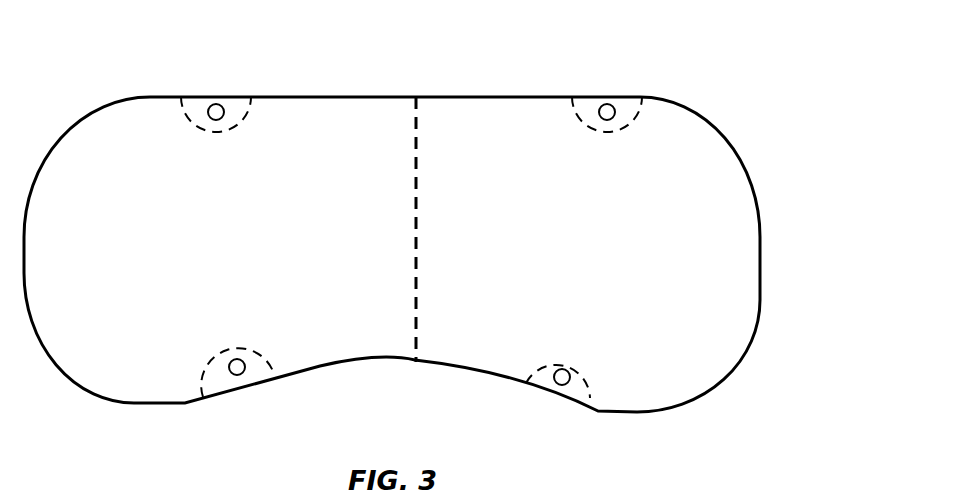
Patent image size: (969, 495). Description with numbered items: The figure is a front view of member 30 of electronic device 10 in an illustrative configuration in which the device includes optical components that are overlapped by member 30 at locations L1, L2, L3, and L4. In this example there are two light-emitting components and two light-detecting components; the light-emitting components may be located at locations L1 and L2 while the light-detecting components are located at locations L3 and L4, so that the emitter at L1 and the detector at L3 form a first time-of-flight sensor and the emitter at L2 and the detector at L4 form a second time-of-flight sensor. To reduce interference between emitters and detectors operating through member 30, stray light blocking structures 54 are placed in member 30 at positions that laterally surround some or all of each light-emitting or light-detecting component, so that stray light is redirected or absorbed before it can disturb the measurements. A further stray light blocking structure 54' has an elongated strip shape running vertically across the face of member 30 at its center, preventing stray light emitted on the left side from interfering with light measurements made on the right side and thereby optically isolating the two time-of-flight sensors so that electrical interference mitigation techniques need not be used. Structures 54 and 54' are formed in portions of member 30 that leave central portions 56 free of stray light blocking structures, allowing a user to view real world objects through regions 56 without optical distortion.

The electronic device 10 is at (728, 55).
The member 30 is at (760, 320).
The stray light blocking structures 54 is at (411, 247).
The stray light blocking structure 54' is at (452, 229).
The central portions 56 is at (250, 231).
The location L1 is at (216, 103).
The location L2 is at (607, 103).
The location L3 is at (238, 376).
The location L4 is at (562, 386).